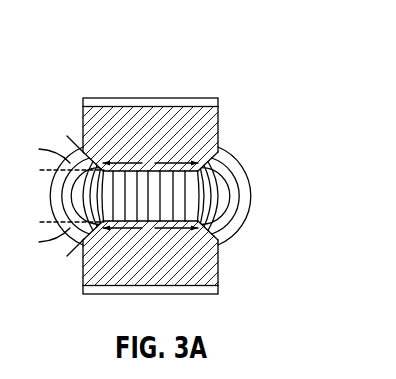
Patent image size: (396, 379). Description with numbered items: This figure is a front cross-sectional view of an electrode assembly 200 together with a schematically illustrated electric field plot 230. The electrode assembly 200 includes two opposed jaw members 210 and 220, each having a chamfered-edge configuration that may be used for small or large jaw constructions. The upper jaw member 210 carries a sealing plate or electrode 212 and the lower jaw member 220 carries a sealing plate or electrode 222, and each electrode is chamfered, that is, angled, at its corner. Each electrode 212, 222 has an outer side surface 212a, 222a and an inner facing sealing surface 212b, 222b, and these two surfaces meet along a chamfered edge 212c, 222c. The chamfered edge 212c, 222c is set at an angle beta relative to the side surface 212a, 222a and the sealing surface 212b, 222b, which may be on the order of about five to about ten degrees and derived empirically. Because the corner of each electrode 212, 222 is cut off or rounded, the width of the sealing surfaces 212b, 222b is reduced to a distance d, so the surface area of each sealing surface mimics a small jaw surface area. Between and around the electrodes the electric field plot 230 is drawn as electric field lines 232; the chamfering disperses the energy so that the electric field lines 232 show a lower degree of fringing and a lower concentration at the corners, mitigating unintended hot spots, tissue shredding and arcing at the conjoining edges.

The electrode assembly 200 is at (221, 72).
The jaw member 210 is at (88, 97).
The sealing plate or electrode 212 is at (95, 133).
The side surface 212a is at (220, 123).
The sealing surface 212b is at (204, 171).
The chamfered edge 212c is at (207, 158).
The jaw member 220 is at (90, 294).
The sealing plate or electrode 222 is at (95, 262).
The side surface 222a is at (219, 252).
The sealing surface 222b is at (204, 220).
The chamfered edge 222c is at (207, 236).
The electric field plot 230 is at (267, 201).
The electric field lines 232 is at (253, 182).